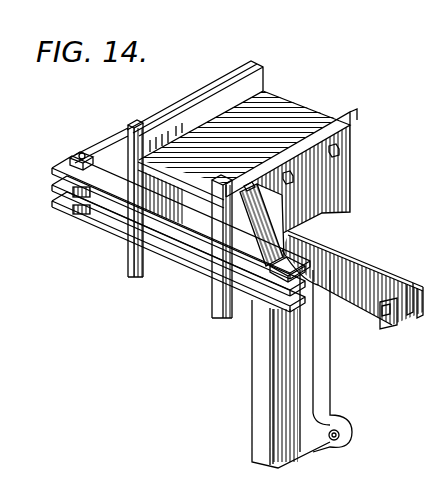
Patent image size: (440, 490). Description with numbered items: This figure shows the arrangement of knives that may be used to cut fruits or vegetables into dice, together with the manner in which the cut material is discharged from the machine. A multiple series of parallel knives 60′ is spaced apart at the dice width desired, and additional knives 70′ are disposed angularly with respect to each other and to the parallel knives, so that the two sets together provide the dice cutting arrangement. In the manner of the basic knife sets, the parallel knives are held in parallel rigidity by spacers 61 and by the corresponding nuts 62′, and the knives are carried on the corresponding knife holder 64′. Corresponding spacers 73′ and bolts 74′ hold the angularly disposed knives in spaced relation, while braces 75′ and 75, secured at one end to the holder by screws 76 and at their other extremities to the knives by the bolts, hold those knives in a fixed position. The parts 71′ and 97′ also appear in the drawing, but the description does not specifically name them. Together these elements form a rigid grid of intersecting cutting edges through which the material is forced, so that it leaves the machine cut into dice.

The parallel knives 60′ is at (372, 262).
The spacers 61 is at (411, 316).
The end block 62′ is at (387, 318).
The table plate 64′ is at (297, 98).
The additional knives 70′ is at (332, 209).
The bolts 71′ is at (333, 156).
The bottom bar 73′ is at (77, 213).
The bracket 74′ is at (88, 151).
The left post and rail 75′ is at (108, 152).
The braces 75 is at (248, 236).
The screws 76 is at (248, 186).
The post feet 97′ is at (155, 274).